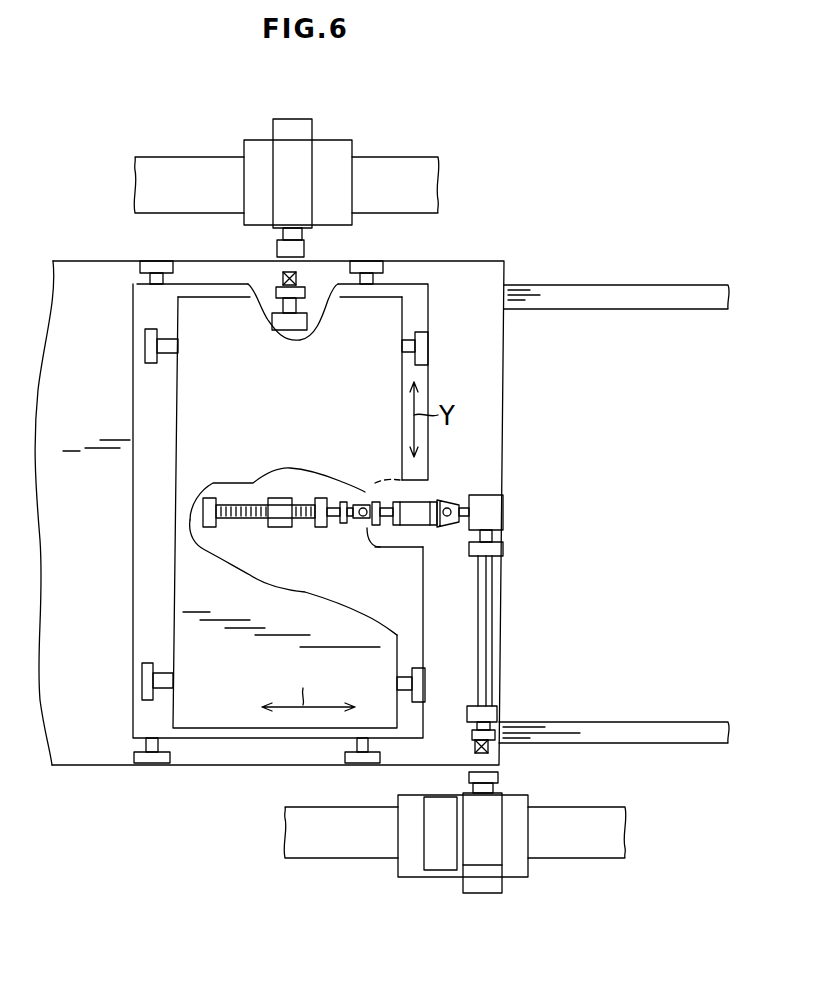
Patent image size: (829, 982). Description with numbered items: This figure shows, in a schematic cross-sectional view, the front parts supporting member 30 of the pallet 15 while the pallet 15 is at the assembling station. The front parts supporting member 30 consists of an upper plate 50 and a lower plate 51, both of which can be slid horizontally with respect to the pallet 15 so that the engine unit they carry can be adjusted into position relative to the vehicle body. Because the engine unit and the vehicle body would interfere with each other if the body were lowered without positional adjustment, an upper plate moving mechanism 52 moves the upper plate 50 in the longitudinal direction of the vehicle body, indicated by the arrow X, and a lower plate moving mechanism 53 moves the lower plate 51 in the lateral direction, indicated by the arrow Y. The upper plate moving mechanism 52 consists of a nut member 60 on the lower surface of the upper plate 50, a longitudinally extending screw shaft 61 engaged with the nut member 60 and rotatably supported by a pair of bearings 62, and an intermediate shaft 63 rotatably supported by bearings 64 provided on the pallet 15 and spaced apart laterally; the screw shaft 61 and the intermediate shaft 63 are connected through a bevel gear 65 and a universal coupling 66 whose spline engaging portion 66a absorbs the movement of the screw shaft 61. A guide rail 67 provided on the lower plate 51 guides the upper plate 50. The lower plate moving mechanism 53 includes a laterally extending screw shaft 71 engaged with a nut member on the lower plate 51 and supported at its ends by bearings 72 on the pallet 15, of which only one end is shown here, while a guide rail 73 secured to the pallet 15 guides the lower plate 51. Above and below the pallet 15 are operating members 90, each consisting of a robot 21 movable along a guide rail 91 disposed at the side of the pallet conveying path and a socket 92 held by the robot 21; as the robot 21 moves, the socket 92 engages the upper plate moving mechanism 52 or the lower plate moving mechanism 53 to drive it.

The pallet 15 is at (504, 463).
The robot 21 is at (277, 248).
The front parts supporting member 30 is at (428, 286).
The upper plate 50 is at (188, 720).
The lower plate 51 is at (418, 317).
The upper plate moving mechanism 52 is at (503, 498).
The lower plate moving mechanism 53 is at (283, 277).
The nut member 60 is at (281, 528).
The screw shaft 61 is at (248, 505).
The bearing 62 is at (210, 496).
The intermediate shaft 63 is at (487, 650).
The bearing 64 is at (503, 548).
The bevel gear 65 is at (497, 515).
The universal coupling 66 is at (447, 499).
The spline engaging portion 66a is at (420, 524).
The guide rail 67 is at (413, 352).
The screw shaft 71 is at (297, 308).
The bearing 72 is at (287, 330).
The guide rail 73 is at (142, 747).
The operating member 90 is at (337, 145).
The guide rail 91 is at (404, 165).
The socket 92 is at (292, 128).